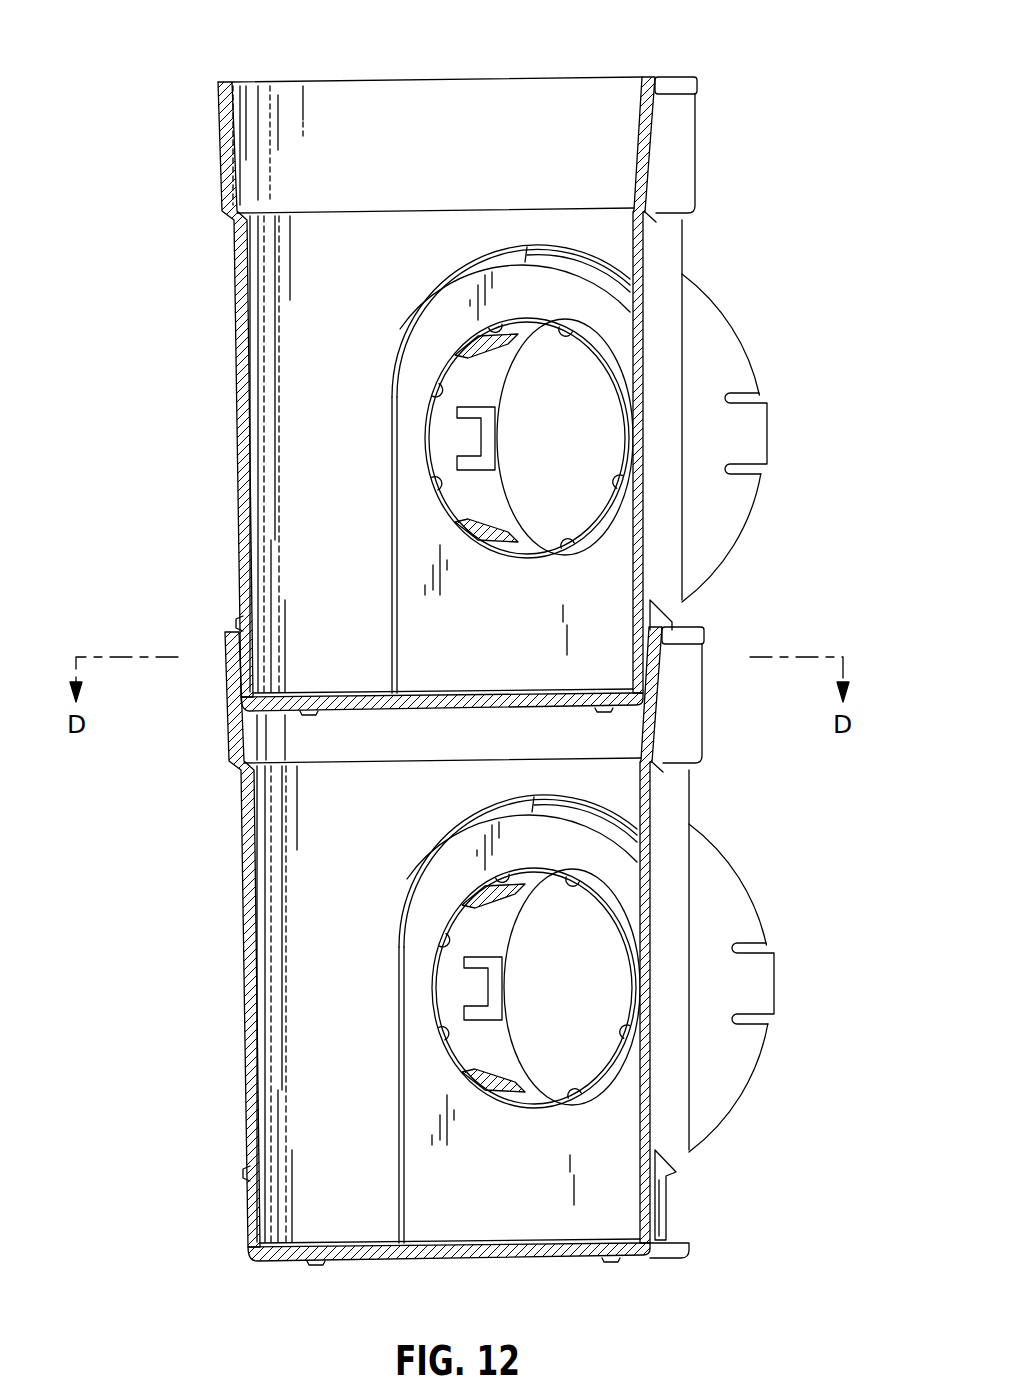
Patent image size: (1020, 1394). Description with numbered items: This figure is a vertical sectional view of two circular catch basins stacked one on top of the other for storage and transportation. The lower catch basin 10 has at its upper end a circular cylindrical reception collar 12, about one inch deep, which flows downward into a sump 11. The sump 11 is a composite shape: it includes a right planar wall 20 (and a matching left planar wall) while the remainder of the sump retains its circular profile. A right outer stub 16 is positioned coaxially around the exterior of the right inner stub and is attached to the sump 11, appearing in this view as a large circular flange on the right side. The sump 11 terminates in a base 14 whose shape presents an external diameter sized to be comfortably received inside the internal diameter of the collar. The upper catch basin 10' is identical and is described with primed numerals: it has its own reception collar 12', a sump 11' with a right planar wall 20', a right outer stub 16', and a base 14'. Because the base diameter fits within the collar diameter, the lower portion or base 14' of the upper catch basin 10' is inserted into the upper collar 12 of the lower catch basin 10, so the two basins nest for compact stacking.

The upper catch basin 10' is at (490, 380).
The reception collar 12' is at (718, 338).
The sump 11' is at (412, 387).
The right outer stub 16' is at (755, 438).
The right planar wall 20' is at (613, 469).
The base 14' is at (394, 722).
The catch basin 10 is at (481, 960).
The reception collar 12 is at (714, 888).
The sump 11 is at (422, 942).
The right outer stub 16 is at (748, 988).
The right planar wall 20 is at (603, 1019).
The base 14 is at (412, 1268).